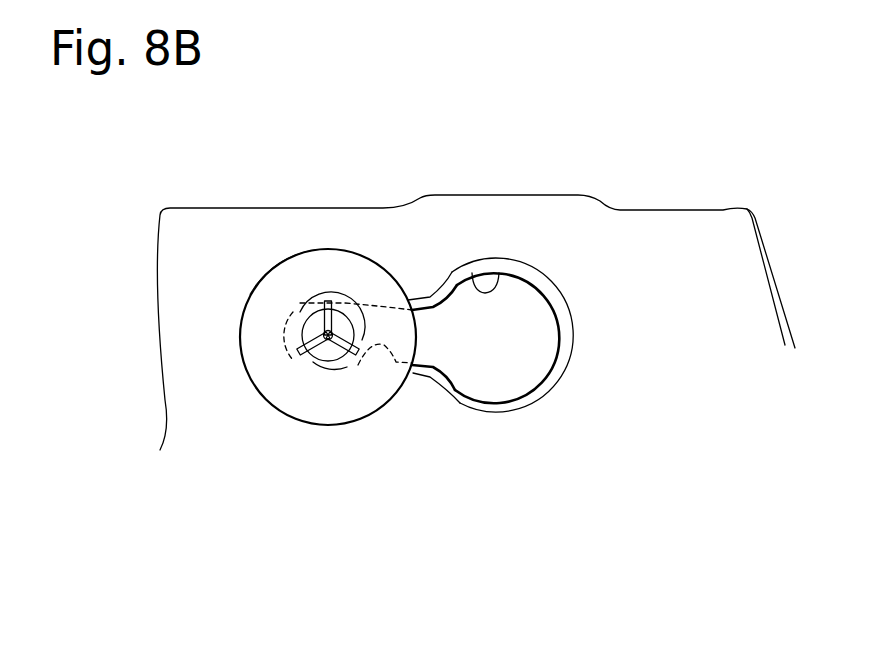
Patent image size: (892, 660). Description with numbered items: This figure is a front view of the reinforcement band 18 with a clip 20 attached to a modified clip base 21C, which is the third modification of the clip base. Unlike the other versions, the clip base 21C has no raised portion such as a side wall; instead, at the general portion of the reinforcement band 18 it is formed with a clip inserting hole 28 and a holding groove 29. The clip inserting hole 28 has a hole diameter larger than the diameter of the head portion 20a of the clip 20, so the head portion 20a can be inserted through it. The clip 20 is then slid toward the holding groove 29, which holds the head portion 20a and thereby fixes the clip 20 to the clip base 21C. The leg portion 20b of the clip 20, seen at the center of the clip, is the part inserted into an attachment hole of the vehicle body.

The reinforcement band 18 is at (250, 420).
The clip 20 is at (340, 250).
The head portion 20a is at (251, 294).
The leg portion 20b is at (320, 375).
The holding groove 29 is at (387, 347).
The clip base 21C is at (560, 290).
The clip inserting hole 28 is at (498, 285).